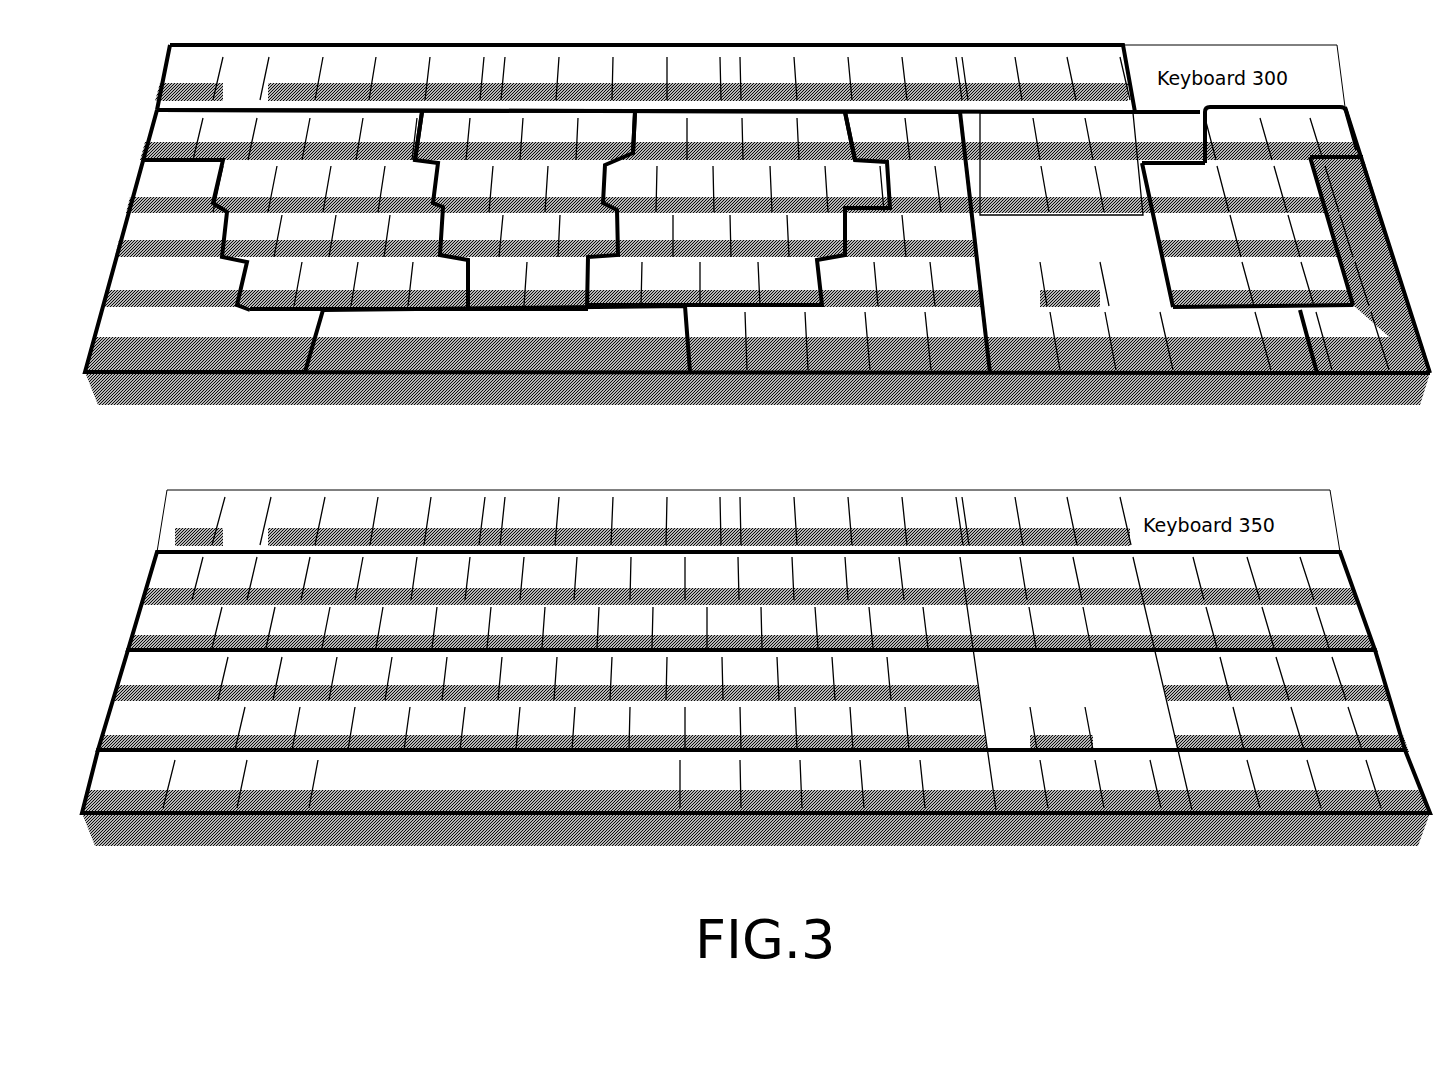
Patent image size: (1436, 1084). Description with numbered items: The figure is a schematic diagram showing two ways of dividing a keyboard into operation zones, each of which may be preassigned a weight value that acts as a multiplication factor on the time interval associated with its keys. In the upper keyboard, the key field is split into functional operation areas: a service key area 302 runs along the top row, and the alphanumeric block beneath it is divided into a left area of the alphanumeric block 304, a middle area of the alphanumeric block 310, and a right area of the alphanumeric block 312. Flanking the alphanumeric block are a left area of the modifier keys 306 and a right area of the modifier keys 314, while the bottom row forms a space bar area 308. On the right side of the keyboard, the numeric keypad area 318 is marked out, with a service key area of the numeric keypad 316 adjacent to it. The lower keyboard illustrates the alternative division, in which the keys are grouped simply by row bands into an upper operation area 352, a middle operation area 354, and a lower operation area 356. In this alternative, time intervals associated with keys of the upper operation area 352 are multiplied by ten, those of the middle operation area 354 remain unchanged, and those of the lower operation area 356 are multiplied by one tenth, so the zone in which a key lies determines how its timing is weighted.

The service key area 302 is at (245, 85).
The left area of the alphanumeric block 304 is at (282, 140).
The left area of the modifier keys 306 is at (142, 275).
The space bar area 308 is at (497, 328).
The middle area of the alphanumeric block 310 is at (538, 225).
The right area of the alphanumeric block 312 is at (760, 225).
The right area of the modifier keys 314 is at (930, 225).
The service key area of the numeric keypad 316 is at (1393, 310).
The numeric keypad area 318 is at (1238, 138).
The upper operation area 352 is at (353, 623).
The middle operation area 354 is at (337, 712).
The lower operation area 356 is at (358, 780).